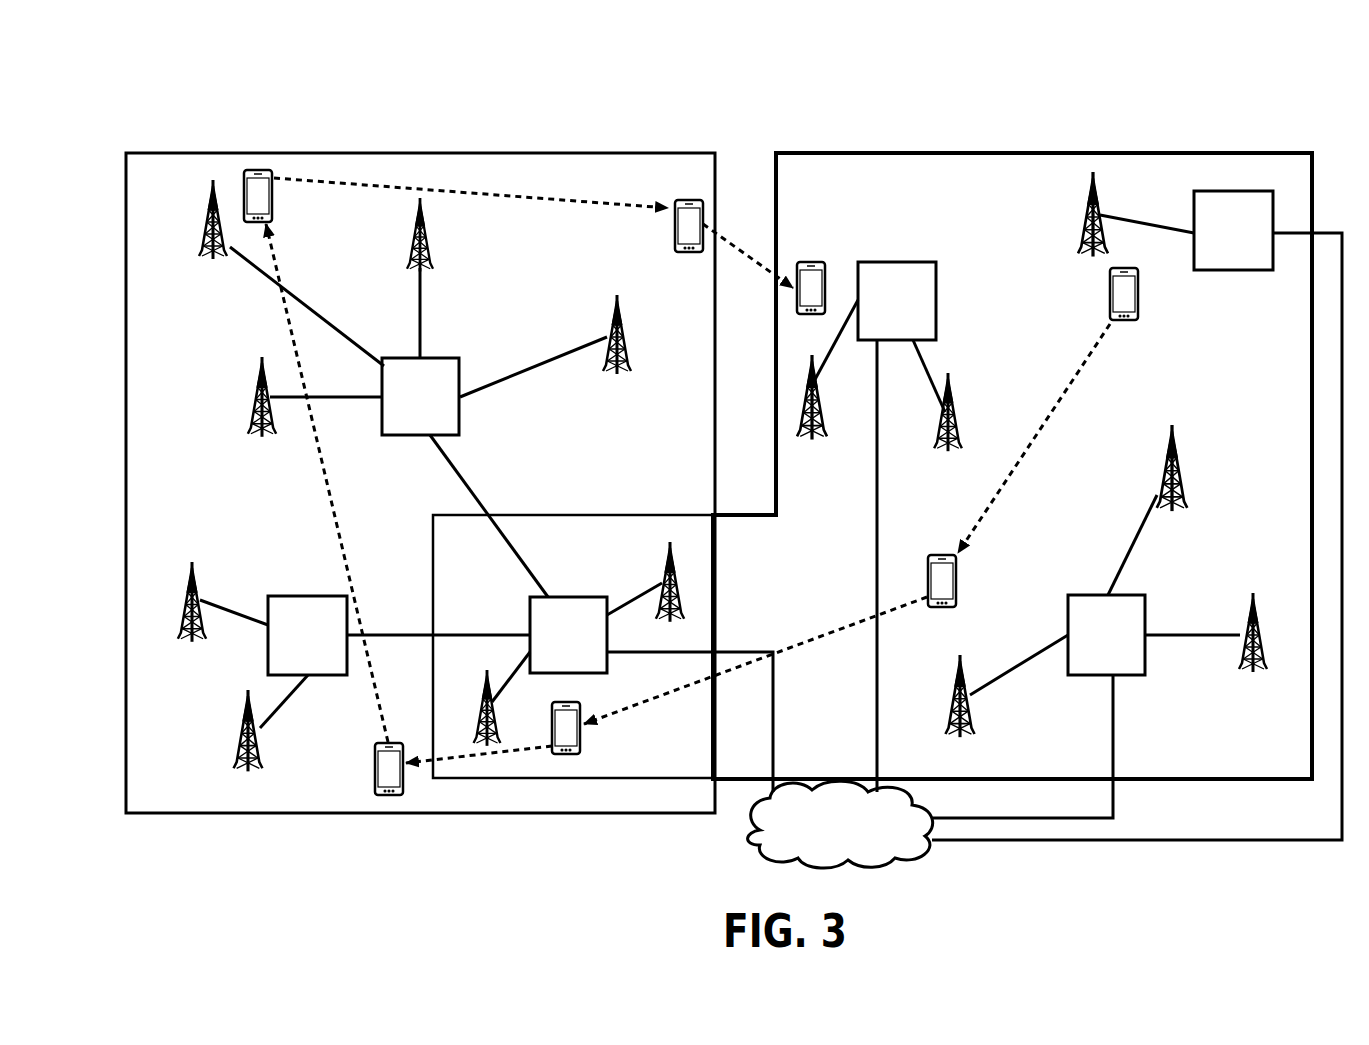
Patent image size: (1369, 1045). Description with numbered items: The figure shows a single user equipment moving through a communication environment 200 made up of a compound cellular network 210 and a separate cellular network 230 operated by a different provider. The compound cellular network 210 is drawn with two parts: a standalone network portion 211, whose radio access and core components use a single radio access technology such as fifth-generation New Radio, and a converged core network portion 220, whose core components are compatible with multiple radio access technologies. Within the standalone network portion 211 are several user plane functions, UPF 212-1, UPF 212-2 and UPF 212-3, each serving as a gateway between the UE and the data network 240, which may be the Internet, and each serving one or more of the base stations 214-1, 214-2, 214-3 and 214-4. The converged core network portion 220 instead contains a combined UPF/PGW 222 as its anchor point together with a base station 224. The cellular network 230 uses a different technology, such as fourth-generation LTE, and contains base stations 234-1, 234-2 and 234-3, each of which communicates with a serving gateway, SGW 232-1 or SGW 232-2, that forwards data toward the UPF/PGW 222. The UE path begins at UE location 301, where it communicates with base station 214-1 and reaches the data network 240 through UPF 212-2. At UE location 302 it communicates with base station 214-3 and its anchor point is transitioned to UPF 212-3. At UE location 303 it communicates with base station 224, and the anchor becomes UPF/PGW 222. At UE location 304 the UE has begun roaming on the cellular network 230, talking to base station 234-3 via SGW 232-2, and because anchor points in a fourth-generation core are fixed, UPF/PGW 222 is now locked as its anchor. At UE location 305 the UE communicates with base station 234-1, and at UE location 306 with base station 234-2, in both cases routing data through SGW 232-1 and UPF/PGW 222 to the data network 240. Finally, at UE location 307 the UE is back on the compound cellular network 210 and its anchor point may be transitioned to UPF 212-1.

The communication environment 200 is at (205, 84).
The compound cellular network 210 is at (1266, 152).
The standalone network portion 211 is at (829, 188).
The UPF 212-1 is at (920, 261).
The UPF 212-2 is at (1226, 271).
The UPF 212-3 is at (1076, 595).
The base station 214-1 is at (1078, 228).
The base station 214-2 is at (1164, 453).
The base station 214-3 is at (950, 690).
The base station 214-4 is at (948, 436).
The converged core network portion 220 is at (703, 770).
The UPF/PGW 222 is at (590, 597).
The base station 224 is at (662, 578).
The cellular network 230 is at (705, 190).
The SGW 232-1 is at (408, 357).
The SGW 232-2 is at (298, 595).
The base station 234-1 is at (208, 208).
The base station 234-2 is at (612, 328).
The base station 234-3 is at (240, 726).
The data network 240 is at (864, 851).
The UE location 301 is at (1109, 303).
The UE location 302 is at (950, 555).
The UE location 303 is at (580, 740).
The UE location 304 is at (404, 784).
The UE location 305 is at (274, 209).
The UE location 306 is at (673, 226).
The UE location 307 is at (812, 260).